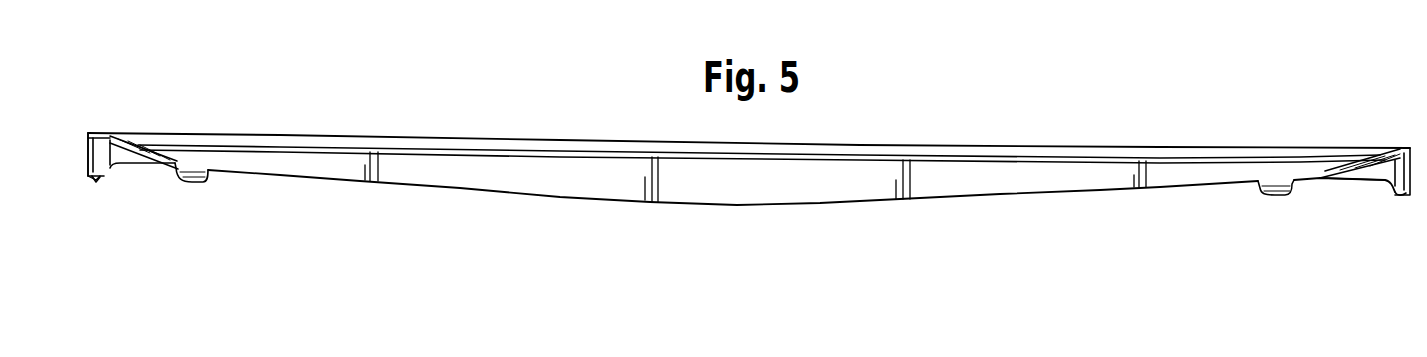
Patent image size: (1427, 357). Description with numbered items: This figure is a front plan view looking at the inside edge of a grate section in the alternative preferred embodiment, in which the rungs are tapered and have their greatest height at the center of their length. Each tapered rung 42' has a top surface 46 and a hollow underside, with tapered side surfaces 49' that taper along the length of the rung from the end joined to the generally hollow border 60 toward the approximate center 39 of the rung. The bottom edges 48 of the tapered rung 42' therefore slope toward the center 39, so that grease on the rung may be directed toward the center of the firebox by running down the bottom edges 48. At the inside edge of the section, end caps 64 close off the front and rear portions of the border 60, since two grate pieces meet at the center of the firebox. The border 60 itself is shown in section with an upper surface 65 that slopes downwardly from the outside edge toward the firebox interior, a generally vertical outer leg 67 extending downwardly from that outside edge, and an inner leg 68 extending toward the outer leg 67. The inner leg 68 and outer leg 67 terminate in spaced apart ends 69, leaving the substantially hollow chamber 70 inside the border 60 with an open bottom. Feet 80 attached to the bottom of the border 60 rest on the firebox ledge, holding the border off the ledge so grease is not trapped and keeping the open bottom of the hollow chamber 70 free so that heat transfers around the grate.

The center 39 is at (752, 207).
The tapered rung 42' is at (749, 121).
The top surface 46 is at (769, 150).
The bottom edges 48 is at (460, 190).
The tapered side surfaces 49' is at (549, 216).
The border 60 is at (109, 129).
The end caps 64 is at (1412, 168).
The upper surface 65 is at (138, 152).
The outer leg 67 is at (90, 157).
The inner leg 68 is at (1362, 187).
The spaced apart ends 69 is at (90, 178).
The hollow chamber 70 is at (96, 185).
The feet 80 is at (207, 178).